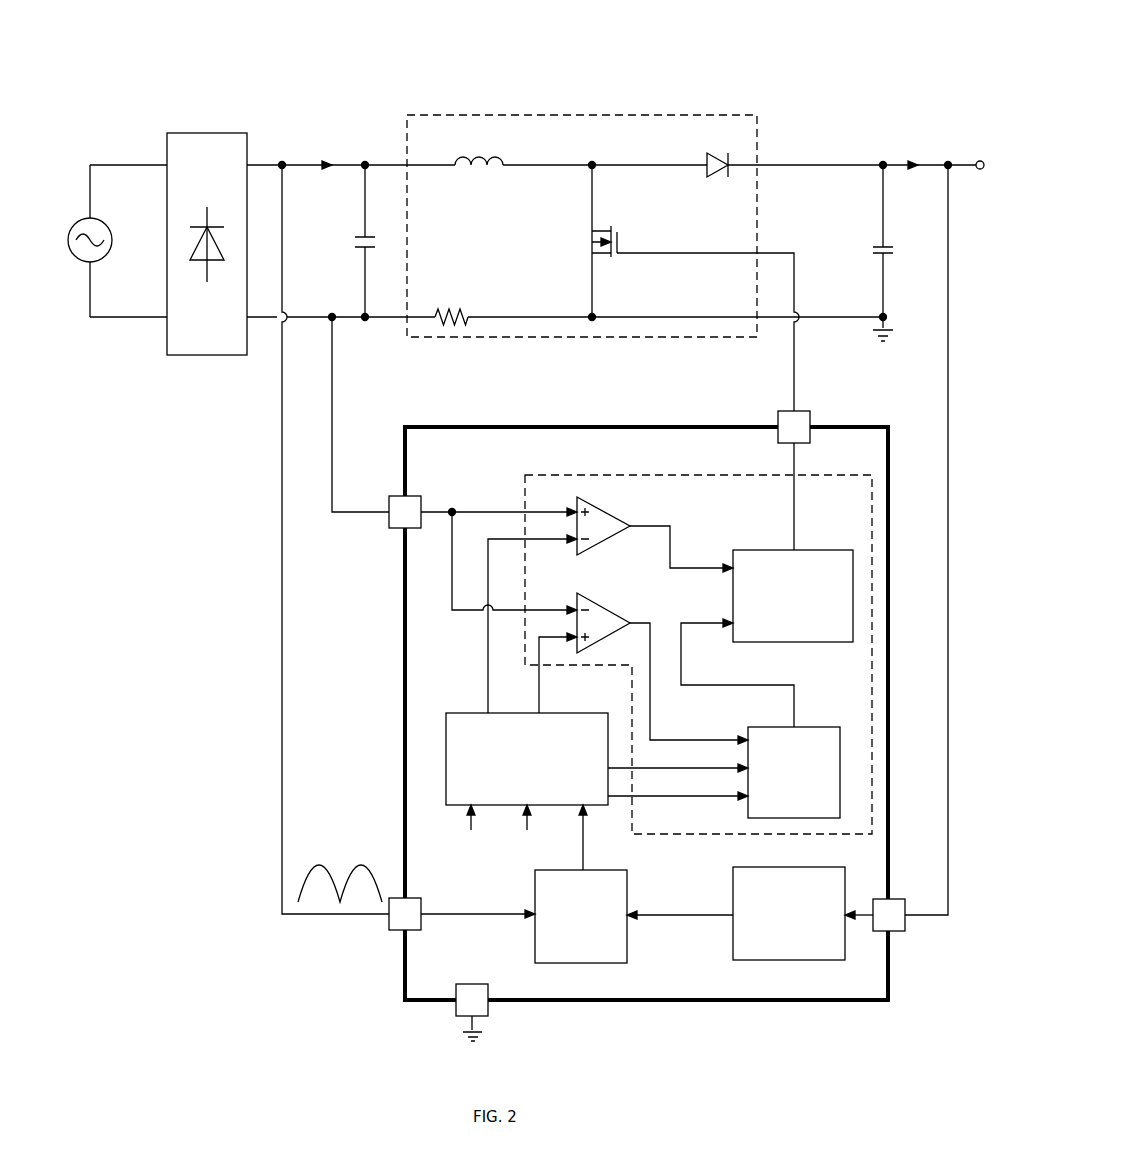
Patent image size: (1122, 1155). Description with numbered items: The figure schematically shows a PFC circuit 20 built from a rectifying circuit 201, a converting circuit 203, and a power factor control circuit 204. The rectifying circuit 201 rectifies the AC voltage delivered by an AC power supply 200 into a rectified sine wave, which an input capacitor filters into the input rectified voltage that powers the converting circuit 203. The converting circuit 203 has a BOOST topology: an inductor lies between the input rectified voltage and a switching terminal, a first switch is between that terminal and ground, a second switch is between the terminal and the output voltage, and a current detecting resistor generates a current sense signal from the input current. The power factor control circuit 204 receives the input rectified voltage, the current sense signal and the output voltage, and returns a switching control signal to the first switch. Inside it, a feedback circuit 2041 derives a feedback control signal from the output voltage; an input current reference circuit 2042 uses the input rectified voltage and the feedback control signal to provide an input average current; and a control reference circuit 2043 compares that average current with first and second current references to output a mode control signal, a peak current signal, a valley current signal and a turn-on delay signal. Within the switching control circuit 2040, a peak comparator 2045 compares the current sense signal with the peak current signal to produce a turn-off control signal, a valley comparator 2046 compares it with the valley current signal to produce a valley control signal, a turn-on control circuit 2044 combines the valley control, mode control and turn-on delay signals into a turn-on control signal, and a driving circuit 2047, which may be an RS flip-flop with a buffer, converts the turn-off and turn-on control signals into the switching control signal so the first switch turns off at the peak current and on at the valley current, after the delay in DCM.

The PFC circuit 20 is at (892, 68).
The AC power supply 200 is at (107, 241).
The rectifying circuit 201 is at (200, 133).
The converting circuit 203 is at (597, 114).
The power factor control circuit 204 is at (403, 718).
The switching control circuit 2040 is at (525, 478).
The feedback circuit 2041 is at (789, 913).
The input current reference circuit 2042 is at (581, 916).
The control reference circuit 2043 is at (527, 759).
The turn-on control circuit 2044 is at (794, 772).
The peak comparator 2045 is at (620, 497).
The valley comparator 2046 is at (620, 593).
The driving circuit 2047 is at (793, 596).